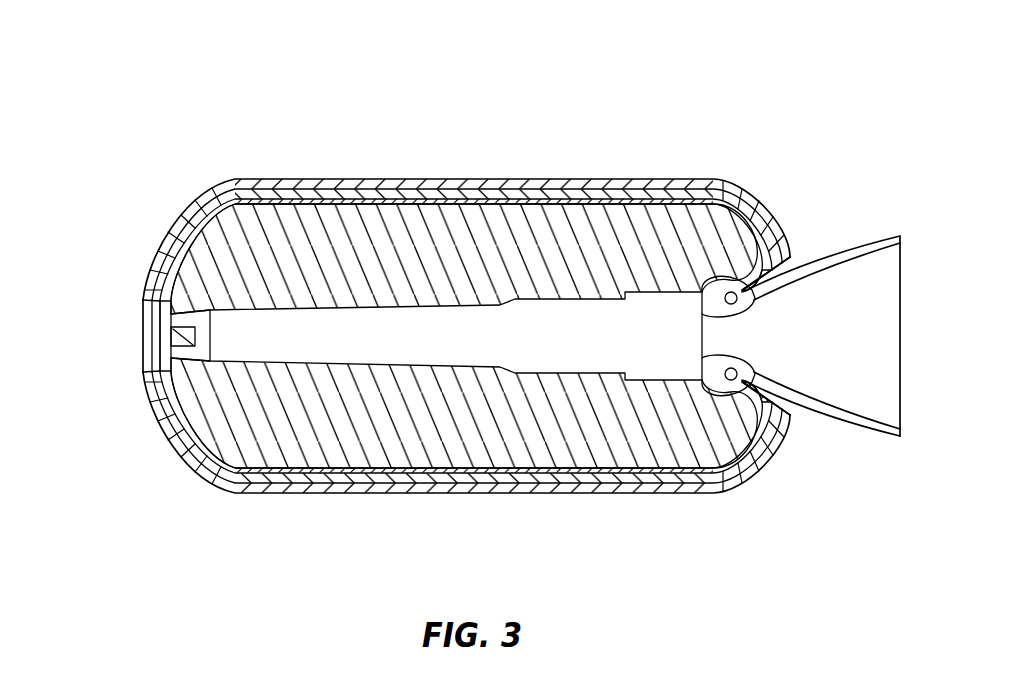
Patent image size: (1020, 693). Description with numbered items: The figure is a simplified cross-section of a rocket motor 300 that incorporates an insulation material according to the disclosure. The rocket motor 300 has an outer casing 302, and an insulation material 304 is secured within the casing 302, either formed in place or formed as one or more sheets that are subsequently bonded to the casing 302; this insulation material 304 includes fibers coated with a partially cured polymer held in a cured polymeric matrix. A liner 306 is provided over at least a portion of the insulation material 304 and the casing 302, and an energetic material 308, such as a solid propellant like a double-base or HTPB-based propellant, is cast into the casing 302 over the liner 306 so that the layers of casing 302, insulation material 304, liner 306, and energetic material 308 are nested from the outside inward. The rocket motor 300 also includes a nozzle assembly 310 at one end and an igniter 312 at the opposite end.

The rocket motor 300 is at (563, 131).
The casing 302 is at (223, 178).
The insulation material 304 is at (327, 190).
The liner 306 is at (390, 205).
The energetic material 308 is at (522, 450).
The nozzle assembly 310 is at (849, 252).
The igniter 312 is at (170, 323).